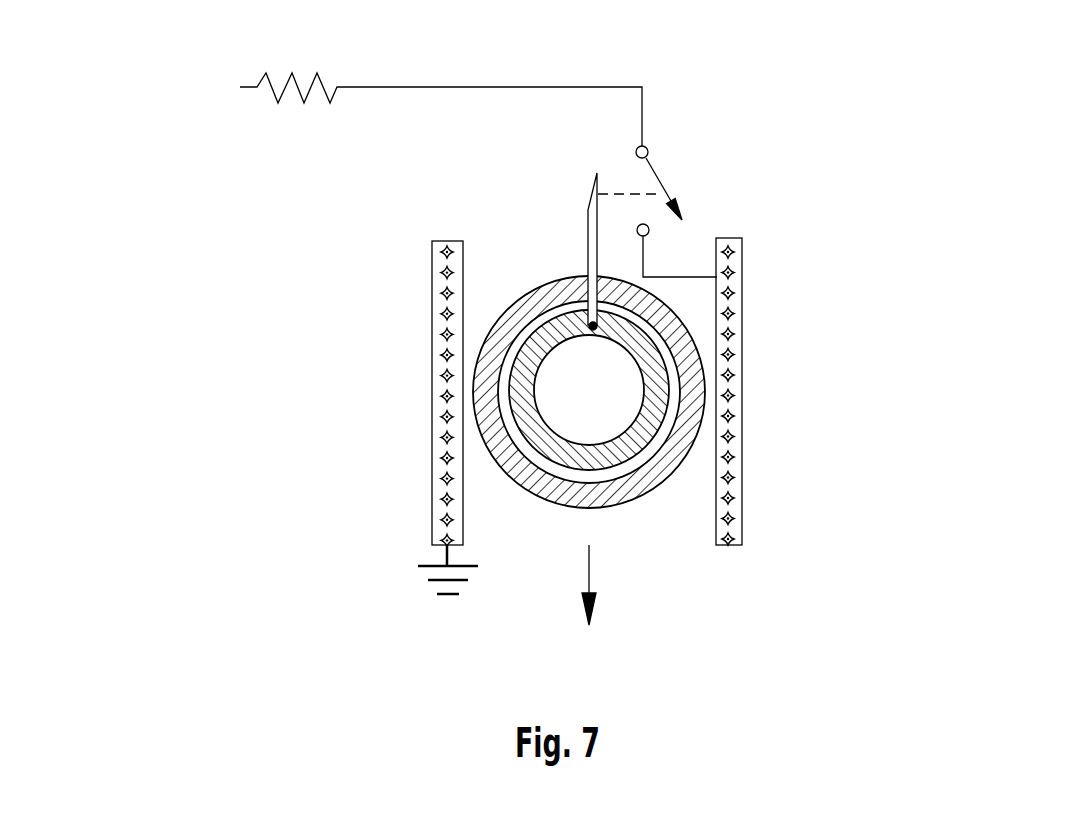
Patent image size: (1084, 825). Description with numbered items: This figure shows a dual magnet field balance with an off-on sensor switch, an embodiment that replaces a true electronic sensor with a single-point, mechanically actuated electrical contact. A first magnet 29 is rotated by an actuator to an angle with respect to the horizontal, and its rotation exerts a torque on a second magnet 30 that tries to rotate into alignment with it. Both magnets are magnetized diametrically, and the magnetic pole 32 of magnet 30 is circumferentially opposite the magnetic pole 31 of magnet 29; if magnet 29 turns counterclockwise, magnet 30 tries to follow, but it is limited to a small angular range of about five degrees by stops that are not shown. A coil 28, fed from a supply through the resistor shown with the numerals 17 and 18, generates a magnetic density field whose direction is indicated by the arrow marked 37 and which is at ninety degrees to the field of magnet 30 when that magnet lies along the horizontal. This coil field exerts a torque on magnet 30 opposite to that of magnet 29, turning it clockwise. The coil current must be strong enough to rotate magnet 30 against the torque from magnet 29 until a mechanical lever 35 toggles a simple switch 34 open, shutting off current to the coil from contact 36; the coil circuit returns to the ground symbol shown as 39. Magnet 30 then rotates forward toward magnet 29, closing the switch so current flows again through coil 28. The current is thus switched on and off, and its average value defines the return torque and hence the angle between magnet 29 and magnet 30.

The battery voltage supply Vbat 17 is at (182, 82).
The resistor 18 is at (307, 98).
The coil 28 is at (440, 325).
The first magnet 29 is at (703, 452).
The second magnet 30 is at (691, 344).
The magnetic pole 31 is at (695, 348).
The magnetic pole 32 is at (662, 390).
The switch 34 is at (632, 192).
The mechanical lever 35 is at (587, 187).
The contact 36 is at (649, 232).
The coil magnetic field Bc 37 is at (560, 658).
The ground 39 is at (445, 562).